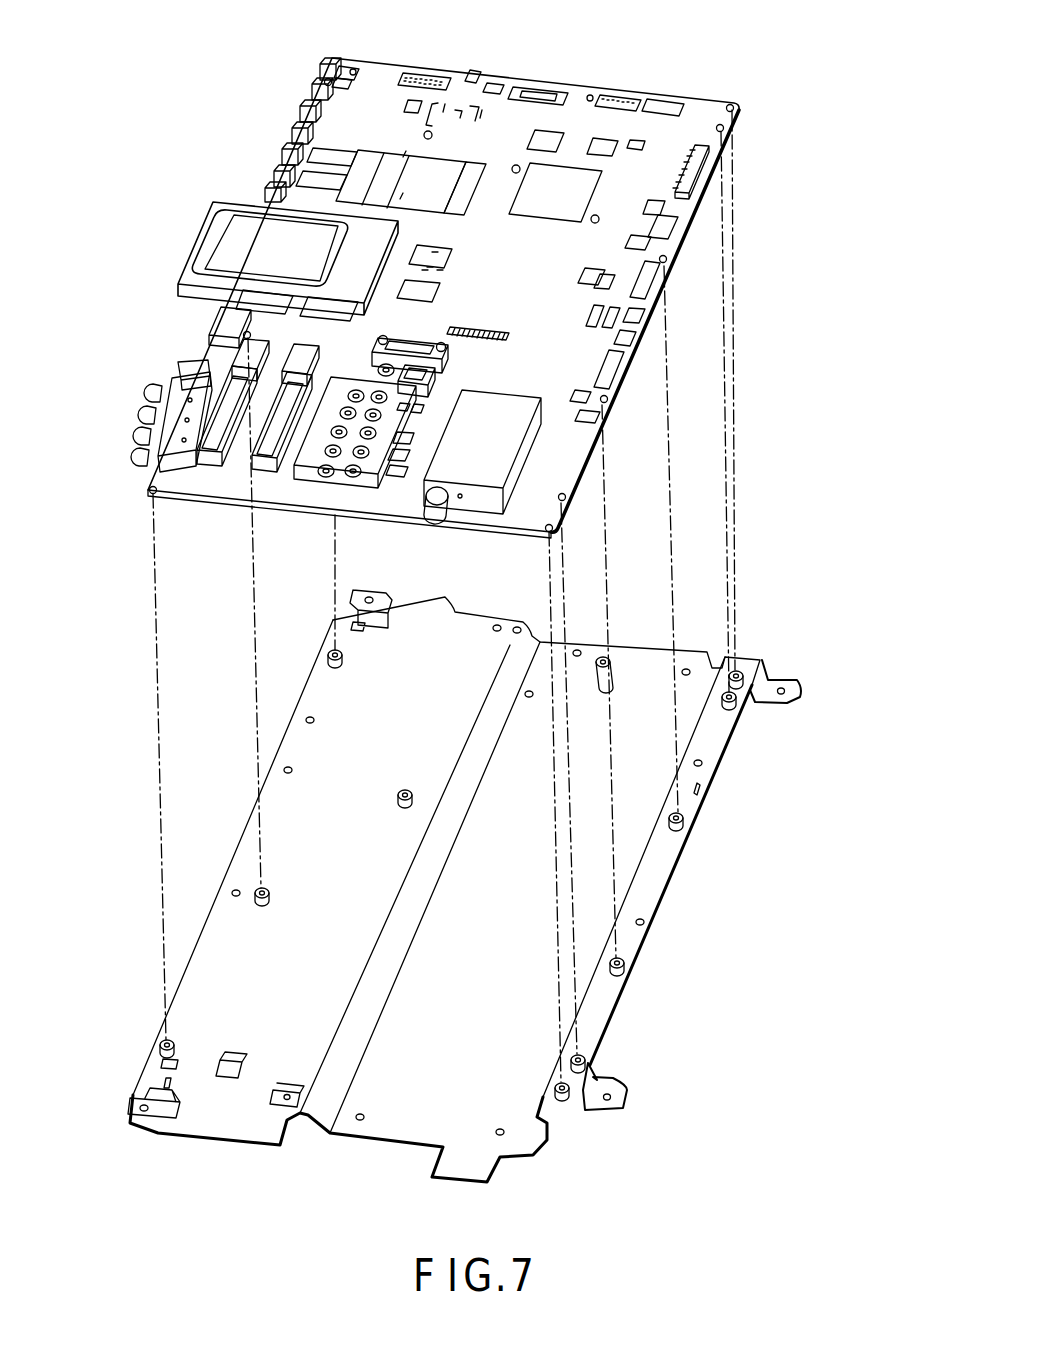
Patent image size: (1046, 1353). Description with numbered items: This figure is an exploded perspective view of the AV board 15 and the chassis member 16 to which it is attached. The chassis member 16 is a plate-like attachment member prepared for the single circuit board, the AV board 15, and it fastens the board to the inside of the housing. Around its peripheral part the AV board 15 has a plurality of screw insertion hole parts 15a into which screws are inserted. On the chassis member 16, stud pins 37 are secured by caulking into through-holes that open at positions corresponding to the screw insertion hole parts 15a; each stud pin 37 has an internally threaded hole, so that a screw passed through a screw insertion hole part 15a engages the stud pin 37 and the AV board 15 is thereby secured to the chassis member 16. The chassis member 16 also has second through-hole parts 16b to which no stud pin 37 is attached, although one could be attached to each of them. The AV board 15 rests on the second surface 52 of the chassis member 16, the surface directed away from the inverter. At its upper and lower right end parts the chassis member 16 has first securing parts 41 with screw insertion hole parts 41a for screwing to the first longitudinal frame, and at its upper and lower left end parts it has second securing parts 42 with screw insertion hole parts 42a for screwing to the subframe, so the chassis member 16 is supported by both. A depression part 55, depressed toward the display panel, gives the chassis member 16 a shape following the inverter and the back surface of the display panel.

The AV board 15 is at (577, 106).
The screw insertion hole part 15a is at (323, 82).
The chassis member 16 is at (394, 1112).
The second through-hole part 16b is at (305, 720).
The stud pin 37 is at (328, 658).
The first securing part 41 is at (790, 680).
The screw insertion hole part 41a is at (786, 691).
The second securing part 42 is at (362, 592).
The screw insertion hole part 42a is at (372, 598).
The second surface 52 is at (352, 775).
The depression part 55 is at (460, 1068).